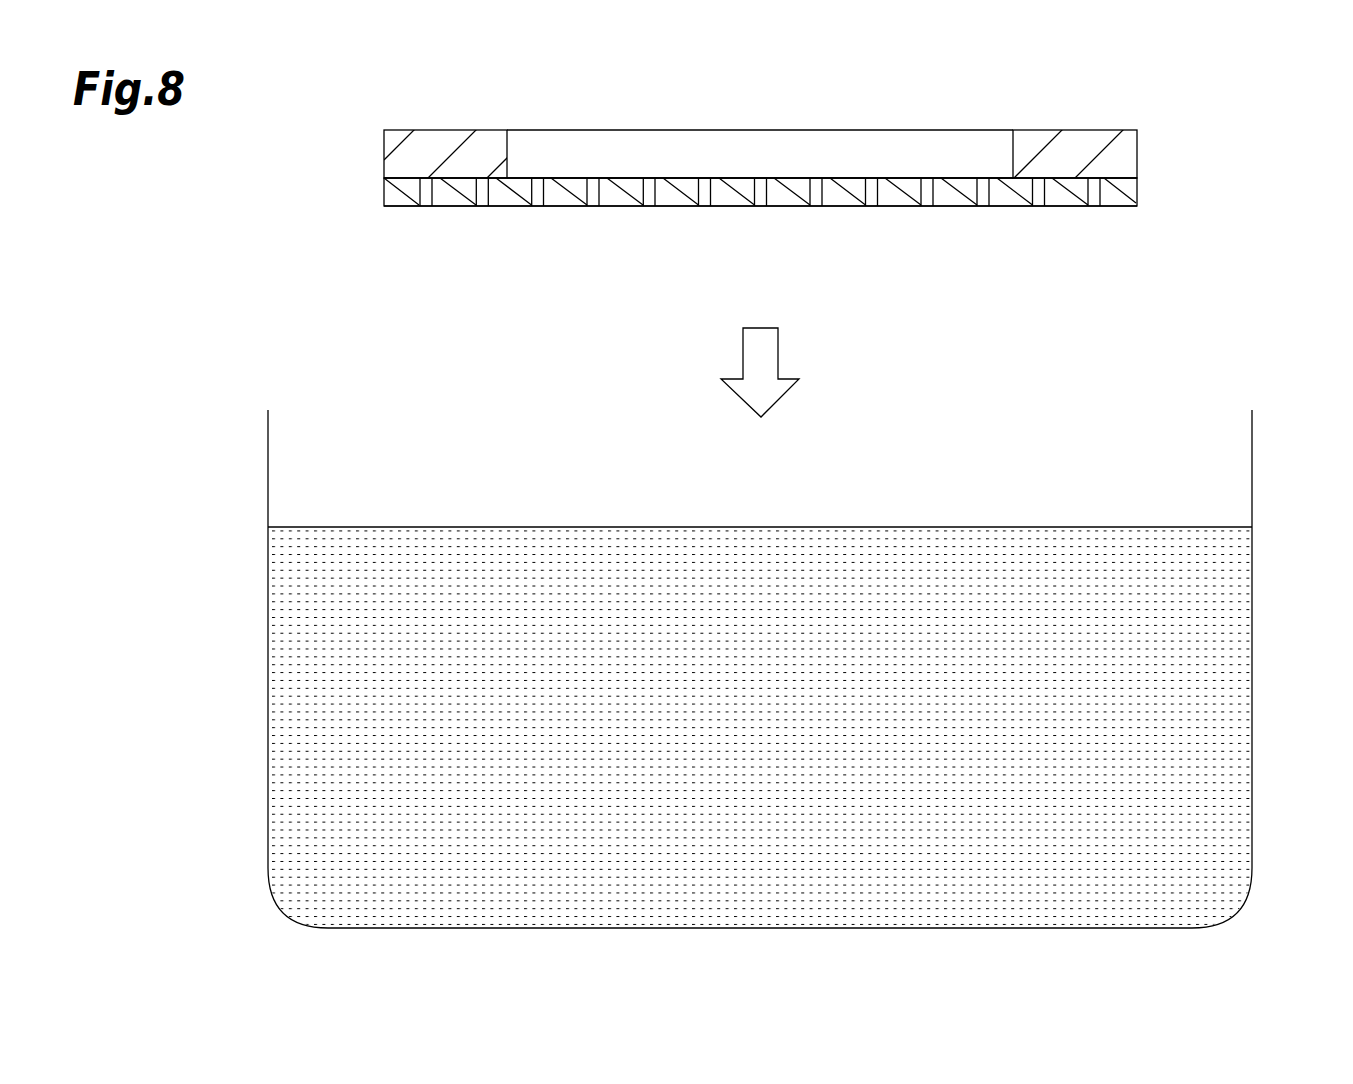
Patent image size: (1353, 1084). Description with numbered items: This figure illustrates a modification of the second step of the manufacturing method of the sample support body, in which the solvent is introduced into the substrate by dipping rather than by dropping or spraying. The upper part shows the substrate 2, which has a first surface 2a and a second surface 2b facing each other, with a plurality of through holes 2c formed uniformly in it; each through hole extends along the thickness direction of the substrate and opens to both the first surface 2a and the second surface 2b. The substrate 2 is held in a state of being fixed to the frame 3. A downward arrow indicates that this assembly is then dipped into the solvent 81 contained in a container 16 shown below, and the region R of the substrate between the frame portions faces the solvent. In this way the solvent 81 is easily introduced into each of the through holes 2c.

The substrate 2 is at (1128, 192).
The first surface 2a is at (1128, 172).
The second surface 2b is at (1112, 207).
The through holes 2c is at (531, 195).
The frame 3 is at (1124, 148).
The recess R is at (836, 172).
The container 16 is at (1253, 450).
The solvent 81 is at (1130, 548).